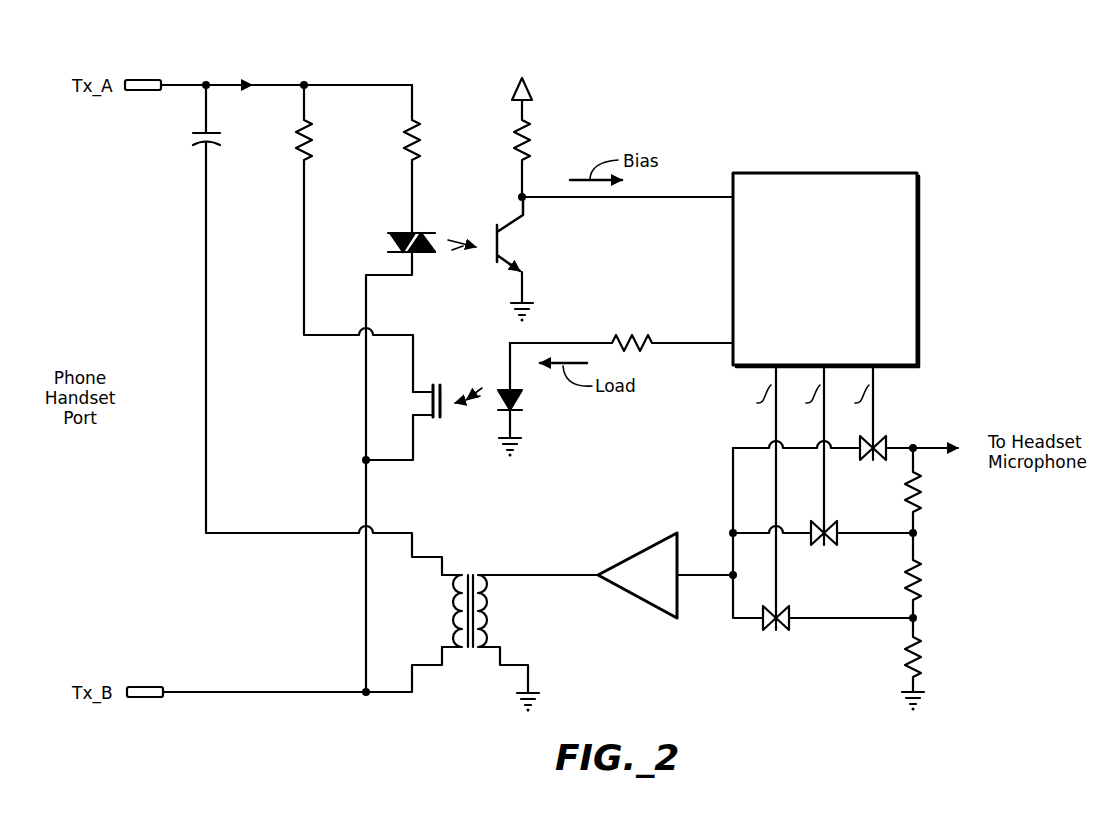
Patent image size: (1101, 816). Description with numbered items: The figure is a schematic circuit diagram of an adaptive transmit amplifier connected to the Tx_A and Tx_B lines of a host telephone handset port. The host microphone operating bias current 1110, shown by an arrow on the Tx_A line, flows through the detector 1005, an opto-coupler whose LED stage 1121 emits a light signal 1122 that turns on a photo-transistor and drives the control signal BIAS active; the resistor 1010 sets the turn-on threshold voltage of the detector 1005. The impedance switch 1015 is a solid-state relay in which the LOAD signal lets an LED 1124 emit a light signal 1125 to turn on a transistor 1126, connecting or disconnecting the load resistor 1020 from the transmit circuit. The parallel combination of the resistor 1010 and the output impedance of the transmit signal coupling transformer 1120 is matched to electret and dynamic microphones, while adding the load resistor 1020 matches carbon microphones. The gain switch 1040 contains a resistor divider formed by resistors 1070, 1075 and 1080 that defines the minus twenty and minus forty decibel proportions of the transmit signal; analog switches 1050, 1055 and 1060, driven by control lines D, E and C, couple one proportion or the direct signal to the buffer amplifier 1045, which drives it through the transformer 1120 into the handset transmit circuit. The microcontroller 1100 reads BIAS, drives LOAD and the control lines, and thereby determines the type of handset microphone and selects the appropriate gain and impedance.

The bias current 1110 is at (250, 70).
The load resistor 1020 is at (313, 131).
The resistor 1010 is at (420, 131).
The detector 1005 is at (429, 444).
The LED stage 1121 is at (395, 245).
The light signal 1122 is at (471, 240).
The microcontroller 1100 is at (797, 173).
The impedance switch 1015 is at (451, 417).
The transistor 1126 is at (440, 405).
The light signal 1125 is at (481, 396).
The LED 1124 is at (522, 396).
The transmit signal coupling transformer 1120 is at (470, 655).
The buffer amplifier 1045 is at (643, 605).
The gain switch 1040 is at (855, 545).
The analog switch 1050 is at (770, 635).
The analog switch 1055 is at (818, 548).
The analog switch 1060 is at (880, 435).
The resistor 1070 is at (920, 655).
The resistor 1075 is at (920, 575).
The resistor 1080 is at (920, 490).